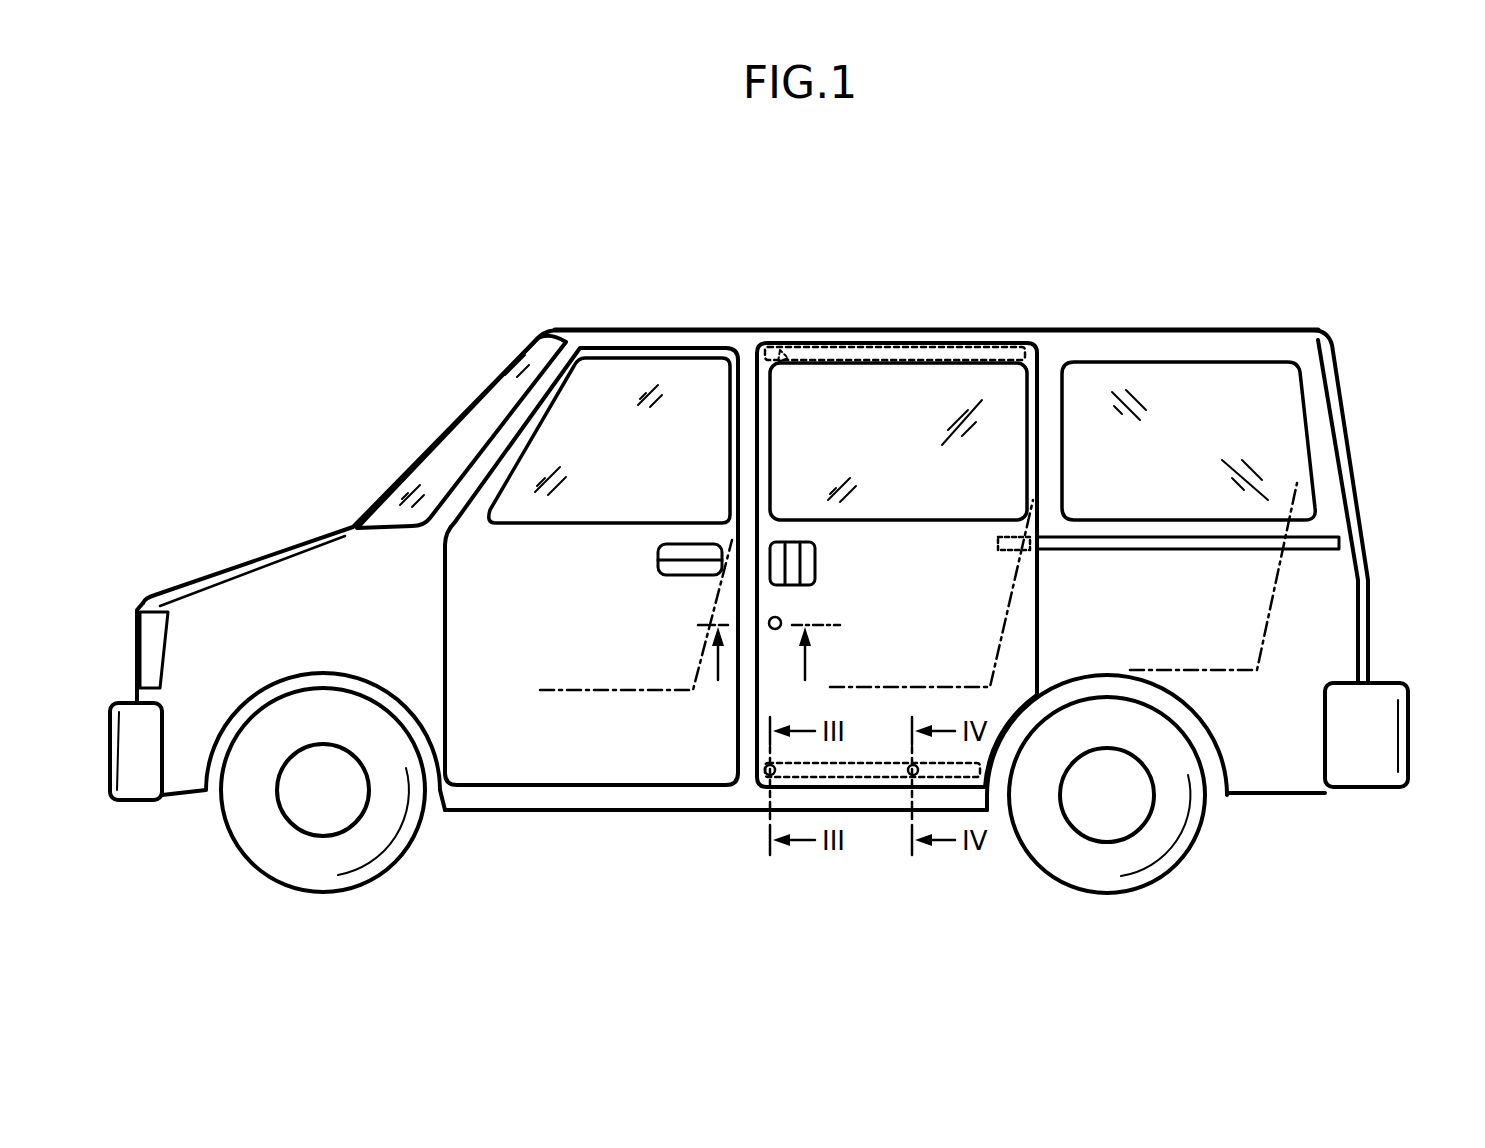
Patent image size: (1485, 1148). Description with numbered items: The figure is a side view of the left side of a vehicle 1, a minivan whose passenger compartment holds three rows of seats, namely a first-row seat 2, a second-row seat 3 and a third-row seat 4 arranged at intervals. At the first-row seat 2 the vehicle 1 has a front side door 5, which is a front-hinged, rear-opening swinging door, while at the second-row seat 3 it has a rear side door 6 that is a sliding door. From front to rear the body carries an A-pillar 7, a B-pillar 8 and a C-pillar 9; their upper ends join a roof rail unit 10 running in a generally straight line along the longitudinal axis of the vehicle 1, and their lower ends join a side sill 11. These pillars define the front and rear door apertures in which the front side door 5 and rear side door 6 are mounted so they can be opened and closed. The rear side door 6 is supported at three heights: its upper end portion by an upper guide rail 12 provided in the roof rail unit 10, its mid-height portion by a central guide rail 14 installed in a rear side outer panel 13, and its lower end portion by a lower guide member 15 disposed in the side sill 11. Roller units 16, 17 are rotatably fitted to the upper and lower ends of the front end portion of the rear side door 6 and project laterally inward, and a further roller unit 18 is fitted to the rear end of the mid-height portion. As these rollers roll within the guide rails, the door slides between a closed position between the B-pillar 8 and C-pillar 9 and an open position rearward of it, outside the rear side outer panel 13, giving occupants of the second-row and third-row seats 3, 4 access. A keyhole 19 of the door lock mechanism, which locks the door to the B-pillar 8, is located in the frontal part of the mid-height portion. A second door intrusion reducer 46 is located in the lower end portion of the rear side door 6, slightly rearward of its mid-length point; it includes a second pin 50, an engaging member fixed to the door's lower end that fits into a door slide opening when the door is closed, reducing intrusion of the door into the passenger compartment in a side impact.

The vehicle 1 is at (408, 305).
The first-row seat 2 is at (605, 690).
The second-row seat 3 is at (993, 640).
The third-row seat 4 is at (1267, 628).
The front side door 5 is at (523, 756).
The rear side door 6 is at (967, 395).
The A-pillar 7 is at (483, 457).
The B-pillar 8 is at (750, 418).
The C-pillar 9 is at (1053, 400).
The roof rail unit 10 is at (690, 340).
The side sill 11 is at (645, 796).
The upper guide rail 12 is at (927, 330).
The rear side outer panel 13 is at (1328, 582).
The central guide rail 14 is at (1195, 545).
The lower guide member 15 is at (872, 790).
The roller unit 16 is at (778, 352).
The roller unit 17 is at (767, 780).
The roller unit 18 is at (1005, 522).
The keyhole 19 is at (779, 618).
The second pin 50 is at (1016, 852).
The second door intrusion reducer 46 is at (925, 770).